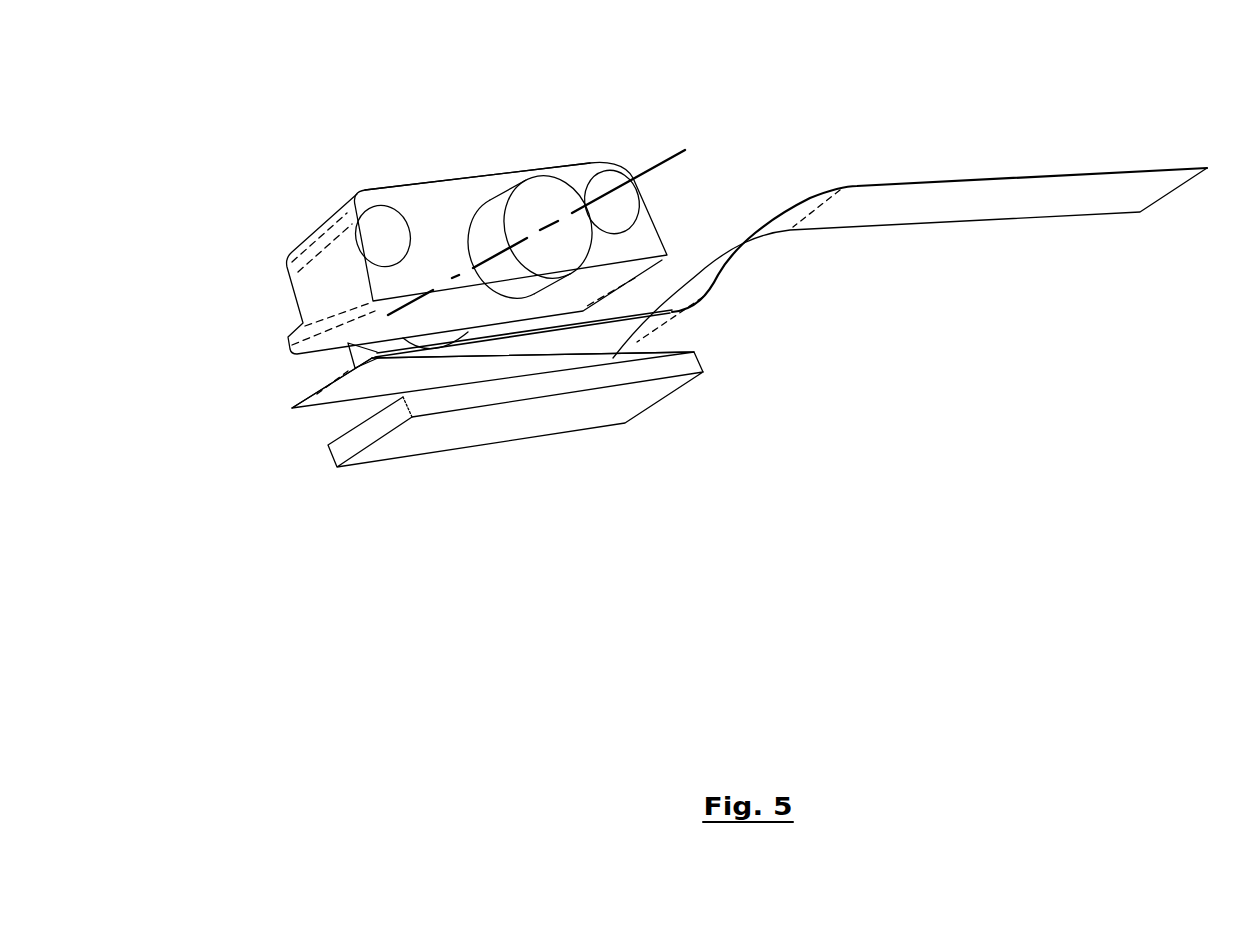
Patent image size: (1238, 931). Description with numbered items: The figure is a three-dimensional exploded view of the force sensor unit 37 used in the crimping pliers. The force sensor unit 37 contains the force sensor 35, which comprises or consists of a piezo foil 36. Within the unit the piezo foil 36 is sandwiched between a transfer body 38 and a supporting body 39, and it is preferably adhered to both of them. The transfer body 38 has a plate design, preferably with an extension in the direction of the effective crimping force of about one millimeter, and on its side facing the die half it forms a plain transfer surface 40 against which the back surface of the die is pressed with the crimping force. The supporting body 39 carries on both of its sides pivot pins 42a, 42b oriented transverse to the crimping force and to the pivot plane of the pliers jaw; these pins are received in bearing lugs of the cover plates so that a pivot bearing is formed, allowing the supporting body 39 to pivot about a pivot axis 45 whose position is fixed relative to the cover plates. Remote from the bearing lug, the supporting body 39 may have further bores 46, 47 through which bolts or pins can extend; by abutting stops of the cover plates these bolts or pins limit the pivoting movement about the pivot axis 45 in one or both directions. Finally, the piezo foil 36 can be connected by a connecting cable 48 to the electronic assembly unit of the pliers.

The force sensor unit 37 is at (205, 277).
The supporting body 39 is at (445, 203).
The pivot pin 42a is at (537, 202).
The pivot pin 42b is at (372, 352).
The pivot axis 45 is at (657, 160).
The bore 46 is at (385, 203).
The bore 47 is at (612, 167).
The connecting cable 48 is at (1015, 202).
The transfer body 38 is at (697, 358).
The force sensor 35 is at (290, 410).
The piezo foil 36 is at (533, 355).
The transfer surface 40 is at (528, 418).